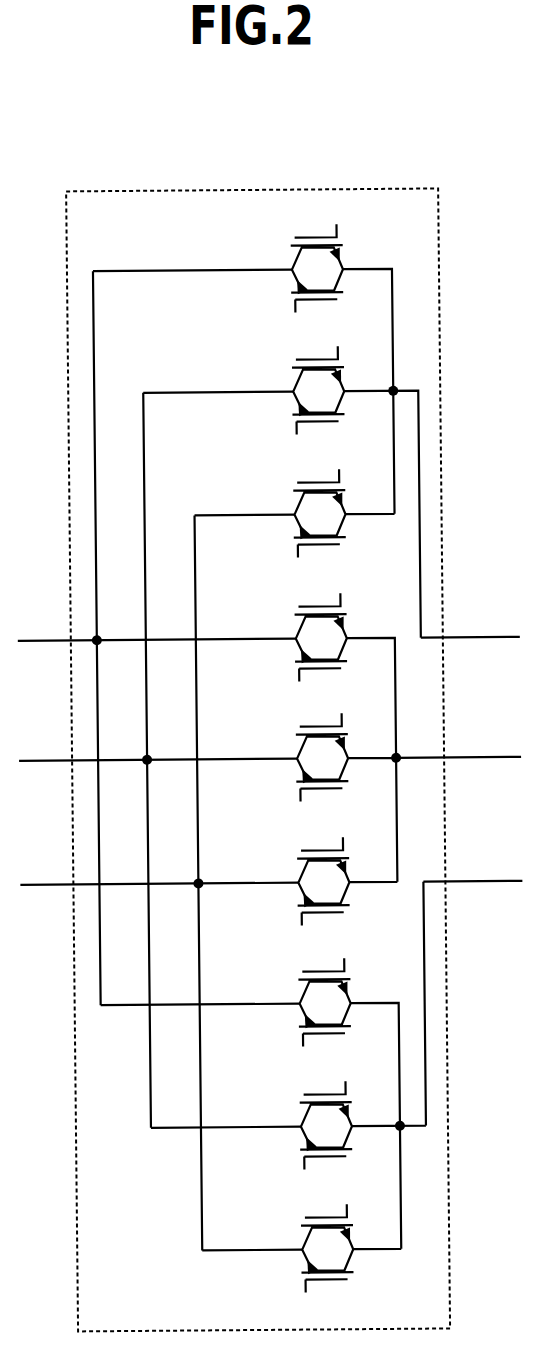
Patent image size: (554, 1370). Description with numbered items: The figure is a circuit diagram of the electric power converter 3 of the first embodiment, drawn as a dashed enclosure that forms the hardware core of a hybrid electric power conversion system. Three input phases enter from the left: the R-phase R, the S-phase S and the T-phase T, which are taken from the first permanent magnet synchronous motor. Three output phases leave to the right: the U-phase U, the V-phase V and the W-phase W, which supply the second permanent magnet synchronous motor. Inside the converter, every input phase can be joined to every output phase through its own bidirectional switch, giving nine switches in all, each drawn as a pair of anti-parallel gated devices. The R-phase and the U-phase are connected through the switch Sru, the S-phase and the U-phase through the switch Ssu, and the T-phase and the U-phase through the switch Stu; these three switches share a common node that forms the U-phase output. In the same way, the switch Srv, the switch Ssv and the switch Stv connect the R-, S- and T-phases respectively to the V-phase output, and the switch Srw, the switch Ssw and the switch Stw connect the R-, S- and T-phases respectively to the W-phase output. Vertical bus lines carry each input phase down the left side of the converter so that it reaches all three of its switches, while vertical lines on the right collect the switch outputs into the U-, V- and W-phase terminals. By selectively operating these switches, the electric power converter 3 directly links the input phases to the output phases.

The electric power converter 3 is at (183, 190).
The R-phase input R is at (157, 628).
The S-phase input S is at (158, 748).
The T-phase input T is at (159, 872).
The U-phase output U is at (470, 625).
The V-phase output V is at (458, 745).
The W-phase output W is at (472, 869).
The switch Sru is at (295, 268).
The switch Ssu is at (295, 390).
The switch Stu is at (298, 513).
The switch Srv is at (299, 637).
The switch Ssv is at (299, 757).
The switch Stv is at (302, 881).
The switch Srw is at (301, 1002).
The switch Ssw is at (301, 1125).
The switch Stw is at (303, 1248).